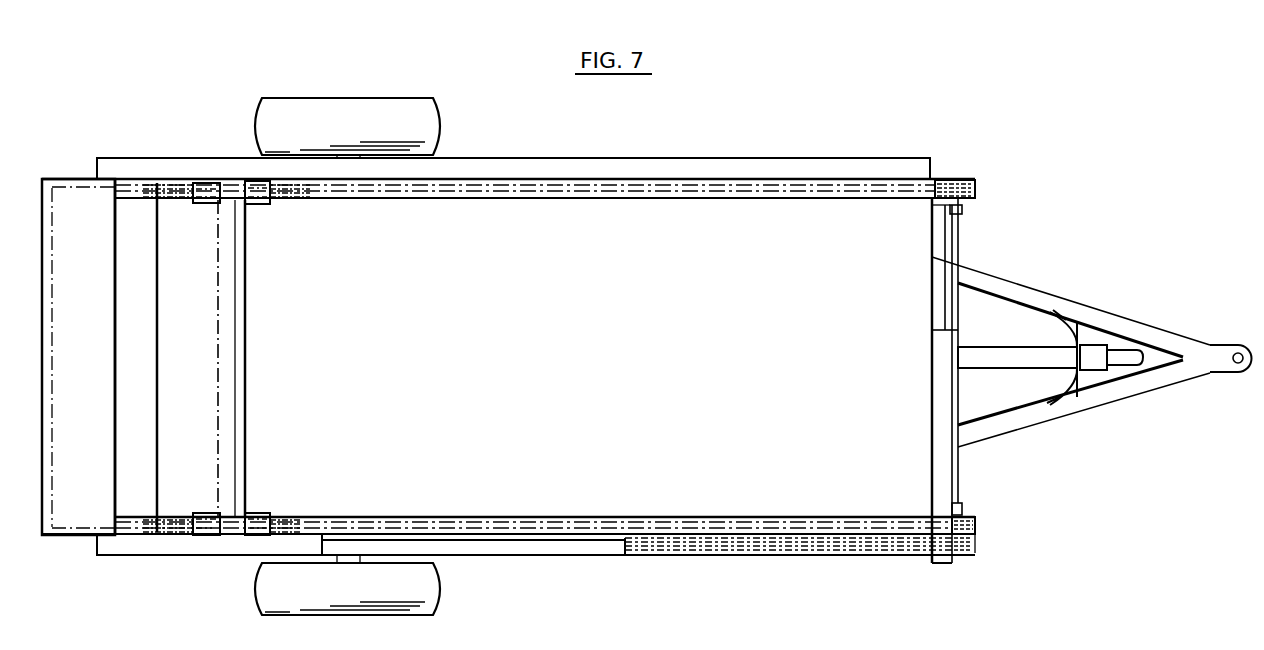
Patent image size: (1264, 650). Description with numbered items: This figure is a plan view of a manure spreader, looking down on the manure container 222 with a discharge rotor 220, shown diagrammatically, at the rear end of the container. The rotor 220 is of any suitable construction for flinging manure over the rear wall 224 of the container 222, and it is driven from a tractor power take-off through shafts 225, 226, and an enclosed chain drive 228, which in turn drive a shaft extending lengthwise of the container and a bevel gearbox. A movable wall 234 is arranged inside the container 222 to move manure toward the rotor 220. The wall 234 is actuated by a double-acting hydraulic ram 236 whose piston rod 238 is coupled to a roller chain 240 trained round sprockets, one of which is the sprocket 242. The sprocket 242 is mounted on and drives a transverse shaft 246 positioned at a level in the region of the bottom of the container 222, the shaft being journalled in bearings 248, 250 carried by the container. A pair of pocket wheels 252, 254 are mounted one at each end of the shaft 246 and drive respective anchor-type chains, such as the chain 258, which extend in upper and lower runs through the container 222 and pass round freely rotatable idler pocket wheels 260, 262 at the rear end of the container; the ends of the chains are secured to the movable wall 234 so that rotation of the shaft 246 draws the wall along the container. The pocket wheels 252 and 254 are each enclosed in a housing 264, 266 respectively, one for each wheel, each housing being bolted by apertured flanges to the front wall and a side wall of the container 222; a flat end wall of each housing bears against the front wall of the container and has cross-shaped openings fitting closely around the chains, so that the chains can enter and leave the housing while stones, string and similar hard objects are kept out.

The discharge rotor 220 is at (75, 520).
The manure container 222 is at (733, 512).
The rear wall 224 is at (43, 183).
The shaft 225 is at (1125, 353).
The shaft 226 is at (1028, 357).
The enclosed chain drive 228 is at (945, 458).
The movable wall 234 is at (246, 270).
The double-acting hydraulic ram 236 is at (510, 553).
The piston rod 238 is at (625, 553).
The roller chain 240 is at (882, 550).
The sprocket 242 is at (960, 555).
The transverse shaft 246 is at (952, 303).
The bearing 248 is at (963, 507).
The bearing 250 is at (962, 213).
The pocket wheel 252 is at (967, 548).
The pocket wheel 254 is at (950, 178).
The anchor-type chain 258 is at (283, 197).
The idler pocket wheel 260 is at (163, 535).
The idler pocket wheel 262 is at (172, 178).
The housing 264 is at (975, 530).
The housing 266 is at (975, 180).